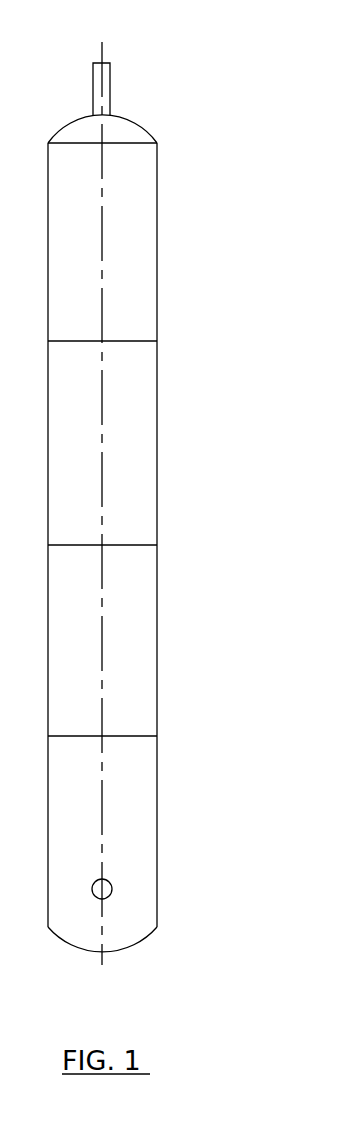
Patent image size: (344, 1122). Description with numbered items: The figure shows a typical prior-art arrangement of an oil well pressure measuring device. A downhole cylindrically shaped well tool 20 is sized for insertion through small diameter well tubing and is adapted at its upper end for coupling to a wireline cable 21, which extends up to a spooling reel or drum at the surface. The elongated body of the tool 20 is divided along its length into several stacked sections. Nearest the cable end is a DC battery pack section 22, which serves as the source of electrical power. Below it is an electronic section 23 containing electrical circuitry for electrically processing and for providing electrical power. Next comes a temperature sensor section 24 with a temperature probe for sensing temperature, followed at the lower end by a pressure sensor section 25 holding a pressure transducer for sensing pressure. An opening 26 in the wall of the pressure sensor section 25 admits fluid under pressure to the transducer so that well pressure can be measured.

The downhole cylindrically shaped well tool 20 is at (155, 587).
The wireline cable 21 is at (110, 88).
The DC battery pack section 22 is at (155, 252).
The electronic section 23 is at (155, 432).
The temperature sensor section 24 is at (155, 683).
The pressure sensor section 25 is at (155, 802).
The opening 26 is at (112, 889).